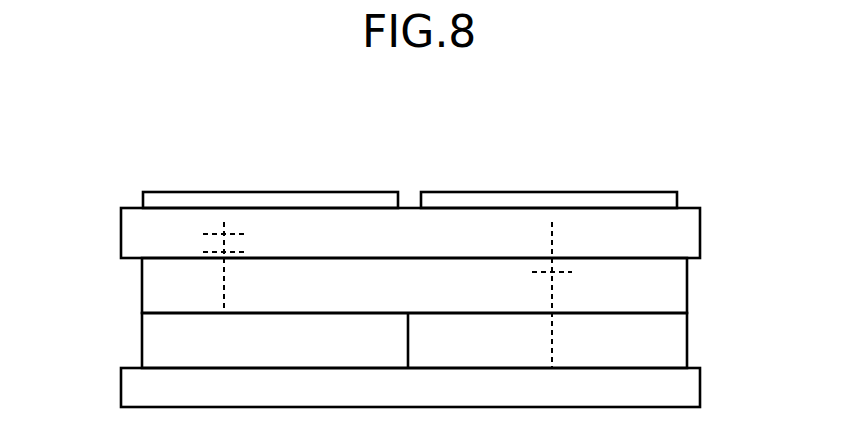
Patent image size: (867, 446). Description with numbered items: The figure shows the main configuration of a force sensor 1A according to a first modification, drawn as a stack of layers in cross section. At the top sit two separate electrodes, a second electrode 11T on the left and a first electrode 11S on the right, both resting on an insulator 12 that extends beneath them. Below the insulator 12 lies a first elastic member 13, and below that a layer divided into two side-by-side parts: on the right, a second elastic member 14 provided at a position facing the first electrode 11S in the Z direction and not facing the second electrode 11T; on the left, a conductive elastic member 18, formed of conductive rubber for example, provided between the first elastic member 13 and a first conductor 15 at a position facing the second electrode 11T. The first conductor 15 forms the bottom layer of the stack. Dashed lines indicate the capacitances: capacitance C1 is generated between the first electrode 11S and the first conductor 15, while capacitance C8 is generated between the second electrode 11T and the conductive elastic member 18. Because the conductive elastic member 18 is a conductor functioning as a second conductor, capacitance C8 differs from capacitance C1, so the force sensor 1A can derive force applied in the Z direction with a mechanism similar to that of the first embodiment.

The force sensor 1A is at (104, 150).
The second electrode 11T is at (370, 192).
The first electrode 11S is at (647, 192).
The insulator 12 is at (688, 234).
The first elastic member 13 is at (676, 289).
The second elastic member 14 is at (676, 346).
The first conductor 15 is at (690, 392).
The conductive elastic member 18 is at (152, 340).
The capacitance C8 is at (224, 224).
The capacitance C1 is at (552, 224).